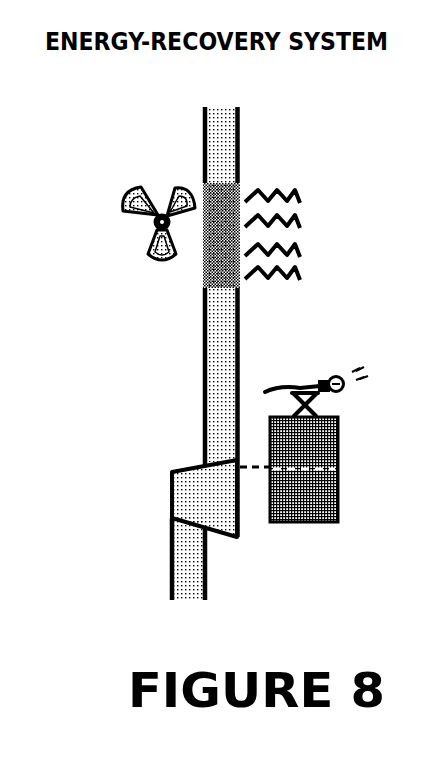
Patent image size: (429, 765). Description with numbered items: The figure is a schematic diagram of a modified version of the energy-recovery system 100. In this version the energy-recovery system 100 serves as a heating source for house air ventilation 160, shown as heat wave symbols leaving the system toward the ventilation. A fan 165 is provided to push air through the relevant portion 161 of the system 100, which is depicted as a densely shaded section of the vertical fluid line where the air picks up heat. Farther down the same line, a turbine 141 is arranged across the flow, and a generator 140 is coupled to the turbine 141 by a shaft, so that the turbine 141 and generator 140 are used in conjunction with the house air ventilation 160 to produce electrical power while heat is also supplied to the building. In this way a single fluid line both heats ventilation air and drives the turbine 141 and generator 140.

The energy-recovery system 100 is at (206, 142).
The house air ventilation 160 is at (299, 235).
The fan 165 is at (143, 238).
The relevant portion of the system 161 is at (199, 250).
The turbine 141 is at (204, 498).
The generator 140 is at (304, 457).